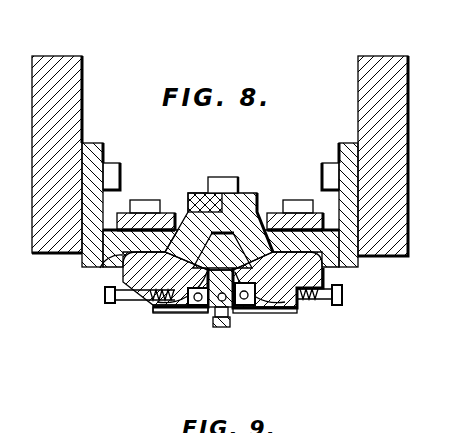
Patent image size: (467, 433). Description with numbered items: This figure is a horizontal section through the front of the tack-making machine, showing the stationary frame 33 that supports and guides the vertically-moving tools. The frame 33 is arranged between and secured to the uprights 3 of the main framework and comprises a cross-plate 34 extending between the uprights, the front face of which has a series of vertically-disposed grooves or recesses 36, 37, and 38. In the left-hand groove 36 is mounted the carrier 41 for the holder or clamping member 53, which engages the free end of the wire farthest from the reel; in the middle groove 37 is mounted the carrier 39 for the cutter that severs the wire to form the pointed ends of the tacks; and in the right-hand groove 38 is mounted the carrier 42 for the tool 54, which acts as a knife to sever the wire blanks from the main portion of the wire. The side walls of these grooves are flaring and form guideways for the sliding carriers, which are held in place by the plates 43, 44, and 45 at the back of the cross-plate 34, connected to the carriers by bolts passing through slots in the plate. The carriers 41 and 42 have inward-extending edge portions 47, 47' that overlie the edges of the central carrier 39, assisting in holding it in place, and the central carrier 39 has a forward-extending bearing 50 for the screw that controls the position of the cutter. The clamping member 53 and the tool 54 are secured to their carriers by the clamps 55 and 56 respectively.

The uprights 3 is at (66, 98).
The stationary frame 33 is at (82, 262).
The cross-plate 34 is at (172, 215).
The groove 36 is at (103, 267).
The groove 37 is at (202, 225).
The groove 38 is at (362, 263).
The carrier 39 is at (224, 245).
The carrier 41 is at (138, 301).
The carrier 42 is at (343, 291).
The plate 43 is at (128, 208).
The plate 44 is at (250, 200).
The plate 45 is at (293, 217).
The inward-extending edge portion 47 is at (180, 340).
The inward-extending edge portion 47' is at (278, 332).
The forward-extending bearing 50 is at (236, 330).
The holder or clamping member 53 is at (200, 310).
The tool 54 is at (248, 308).
The clamp 55 is at (178, 312).
The clamp 56 is at (300, 310).